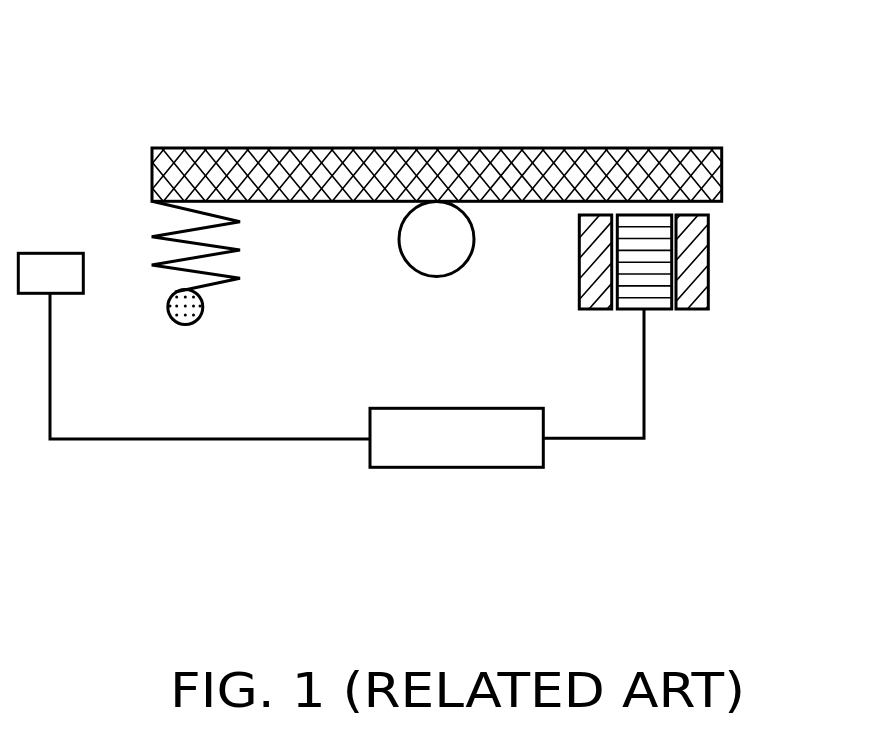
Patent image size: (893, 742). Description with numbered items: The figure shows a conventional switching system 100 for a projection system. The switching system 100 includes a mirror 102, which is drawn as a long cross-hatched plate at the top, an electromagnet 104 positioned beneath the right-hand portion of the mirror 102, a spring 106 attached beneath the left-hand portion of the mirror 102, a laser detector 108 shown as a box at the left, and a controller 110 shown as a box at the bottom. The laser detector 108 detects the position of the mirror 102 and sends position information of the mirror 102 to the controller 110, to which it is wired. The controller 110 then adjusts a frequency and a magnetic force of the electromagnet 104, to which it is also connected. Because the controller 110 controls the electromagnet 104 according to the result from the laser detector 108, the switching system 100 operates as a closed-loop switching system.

The switching system 100 is at (123, 31).
The mirror 102 is at (331, 158).
The electromagnet 104 is at (708, 260).
The spring 106 is at (188, 306).
The laser detector 108 is at (50, 263).
The controller 110 is at (453, 452).